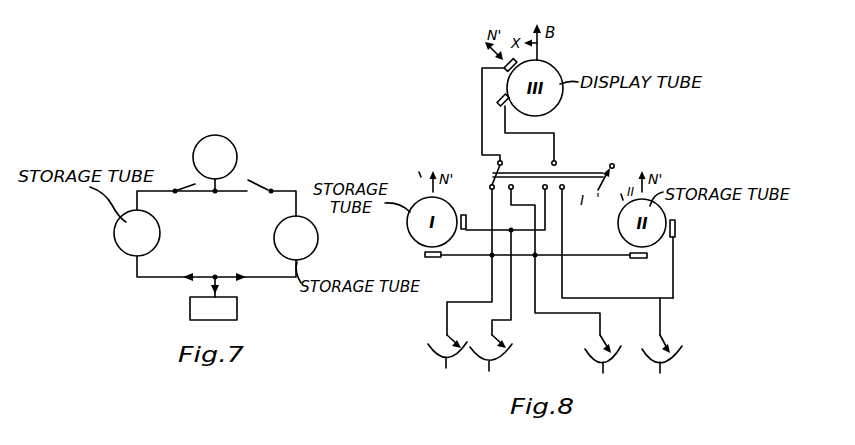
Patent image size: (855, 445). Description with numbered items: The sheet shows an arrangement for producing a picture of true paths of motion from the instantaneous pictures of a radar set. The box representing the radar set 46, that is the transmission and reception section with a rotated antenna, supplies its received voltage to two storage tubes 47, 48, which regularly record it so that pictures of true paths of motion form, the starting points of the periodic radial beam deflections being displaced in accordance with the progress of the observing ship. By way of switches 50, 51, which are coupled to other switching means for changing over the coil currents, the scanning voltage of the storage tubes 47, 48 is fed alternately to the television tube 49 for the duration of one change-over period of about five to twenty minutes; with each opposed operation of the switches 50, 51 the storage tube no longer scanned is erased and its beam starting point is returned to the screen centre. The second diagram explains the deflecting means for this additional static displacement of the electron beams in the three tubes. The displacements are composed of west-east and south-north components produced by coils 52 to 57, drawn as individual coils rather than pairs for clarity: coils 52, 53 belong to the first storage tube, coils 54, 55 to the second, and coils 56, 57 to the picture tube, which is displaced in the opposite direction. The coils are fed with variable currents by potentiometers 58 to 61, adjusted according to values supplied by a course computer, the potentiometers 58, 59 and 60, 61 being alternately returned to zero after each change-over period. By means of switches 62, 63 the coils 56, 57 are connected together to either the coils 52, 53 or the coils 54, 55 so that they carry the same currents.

In FIG. 7, the radar set 46 is at (237, 311).
In FIG. 7, the storage tube 47 is at (127, 246).
In FIG. 7, the storage tube 48 is at (312, 253).
In FIG. 7, the television tube 49 is at (229, 153).
In FIG. 7, the switch 50 is at (186, 195).
In FIG. 7, the switch 51 is at (253, 189).
In FIG. 8, the coil 52 is at (423, 253).
In FIG. 8, the coil 53 is at (467, 229).
In FIG. 8, the coil 54 is at (648, 262).
In FIG. 8, the coil 55 is at (680, 230).
In FIG. 8, the coil 56 is at (502, 62).
In FIG. 8, the coil 57 is at (500, 101).
In FIG. 8, the potentiometer 58 is at (433, 360).
In FIG. 8, the potentiometer 59 is at (482, 364).
In FIG. 8, the potentiometer 60 is at (610, 361).
In FIG. 8, the potentiometer 61 is at (670, 360).
In FIG. 8, the switch 62 is at (490, 172).
In FIG. 8, the switch 63 is at (560, 170).